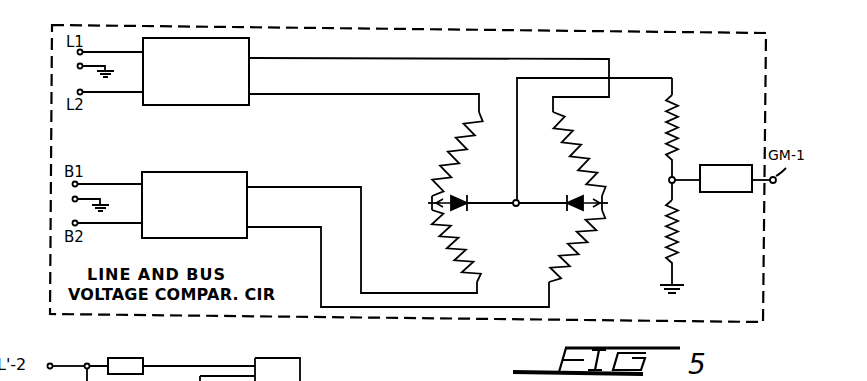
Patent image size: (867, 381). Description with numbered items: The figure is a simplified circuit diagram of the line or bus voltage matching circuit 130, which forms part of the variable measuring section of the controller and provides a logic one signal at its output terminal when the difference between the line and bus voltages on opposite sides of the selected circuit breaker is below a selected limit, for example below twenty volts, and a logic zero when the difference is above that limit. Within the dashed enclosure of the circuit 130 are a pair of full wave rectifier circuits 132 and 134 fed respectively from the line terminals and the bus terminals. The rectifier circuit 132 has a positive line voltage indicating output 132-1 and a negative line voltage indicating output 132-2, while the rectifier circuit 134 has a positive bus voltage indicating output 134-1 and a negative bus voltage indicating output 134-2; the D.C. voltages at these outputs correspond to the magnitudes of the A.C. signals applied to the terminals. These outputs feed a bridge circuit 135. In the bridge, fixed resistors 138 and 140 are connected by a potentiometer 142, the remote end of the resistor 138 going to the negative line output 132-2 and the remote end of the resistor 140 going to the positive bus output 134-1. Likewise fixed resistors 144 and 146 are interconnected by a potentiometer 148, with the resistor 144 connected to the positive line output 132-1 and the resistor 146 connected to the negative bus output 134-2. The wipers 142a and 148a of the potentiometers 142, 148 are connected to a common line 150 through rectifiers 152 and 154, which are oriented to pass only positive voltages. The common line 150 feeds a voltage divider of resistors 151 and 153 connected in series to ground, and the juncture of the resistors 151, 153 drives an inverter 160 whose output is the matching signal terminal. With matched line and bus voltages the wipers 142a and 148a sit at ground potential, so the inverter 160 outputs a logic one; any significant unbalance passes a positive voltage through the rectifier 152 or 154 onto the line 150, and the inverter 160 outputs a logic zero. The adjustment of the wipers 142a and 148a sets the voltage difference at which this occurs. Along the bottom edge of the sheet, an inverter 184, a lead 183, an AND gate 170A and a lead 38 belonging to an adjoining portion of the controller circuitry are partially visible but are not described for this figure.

The line or bus voltage matching circuit 130 is at (627, 33).
The full wave rectifier circuit 132 is at (193, 38).
The positive line voltage indicating output 132-1 is at (429, 72).
The negative line voltage indicating output 132-2 is at (252, 96).
The full wave rectifier circuit 134 is at (202, 188).
The positive bus voltage indicating output 134-1 is at (249, 183).
The negative bus voltage indicating output 134-2 is at (249, 230).
The bridge circuit 135 is at (503, 157).
The fixed resistor 138 is at (454, 131).
The fixed resistor 140 is at (452, 263).
The potentiometer 142 is at (430, 193).
The wiper 142a is at (437, 199).
The fixed resistor 144 is at (593, 156).
The fixed resistor 146 is at (574, 268).
The potentiometer 148 is at (612, 189).
The wiper 148a is at (600, 201).
The common line 150 is at (519, 149).
The resistor 151 is at (682, 121).
The rectifier 152 is at (470, 206).
The resistor 153 is at (674, 231).
The rectifier 154 is at (580, 212).
The inverter 160 is at (739, 162).
The inverter 184 is at (126, 357).
The lead 183 is at (169, 364).
The AND gate 170A is at (278, 349).
The lead 38 is at (372, 378).